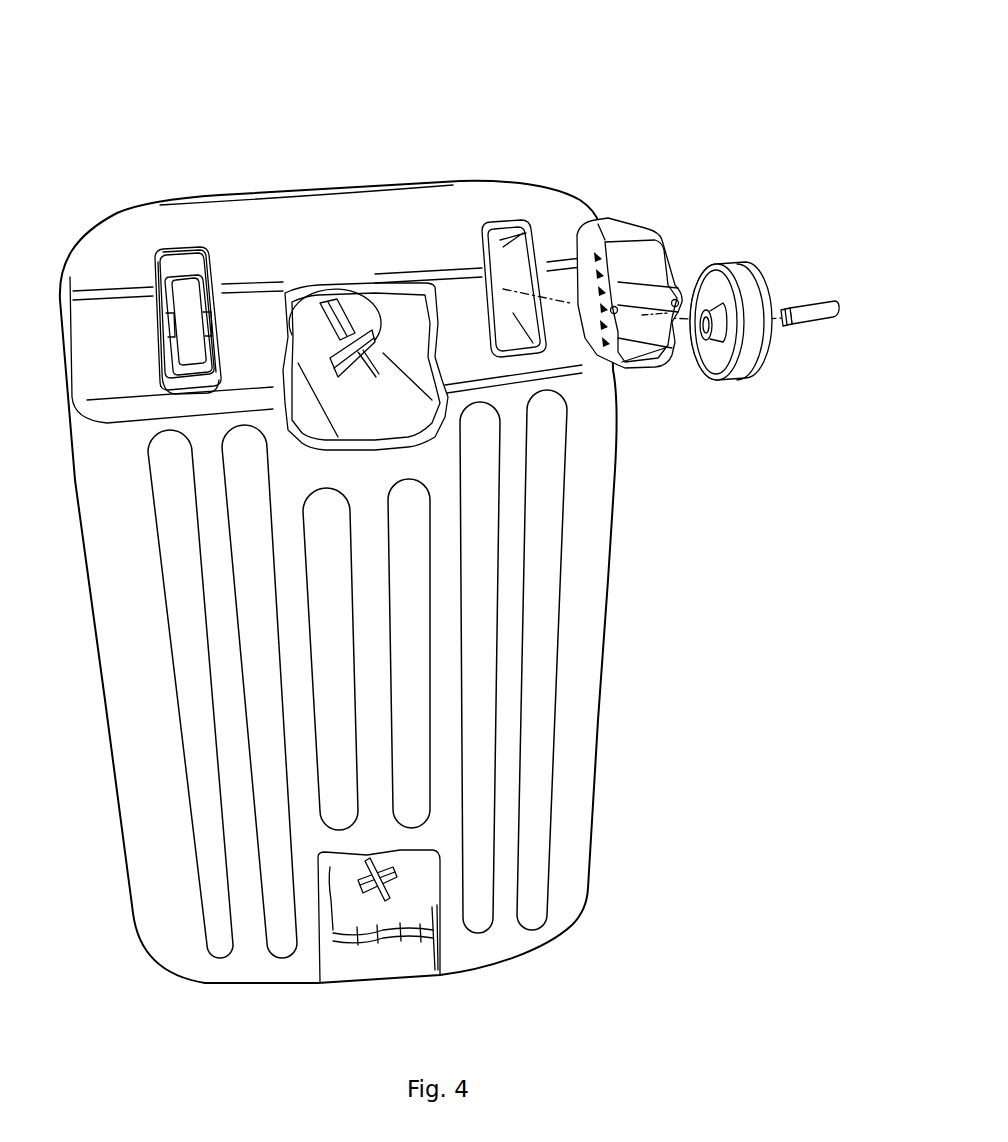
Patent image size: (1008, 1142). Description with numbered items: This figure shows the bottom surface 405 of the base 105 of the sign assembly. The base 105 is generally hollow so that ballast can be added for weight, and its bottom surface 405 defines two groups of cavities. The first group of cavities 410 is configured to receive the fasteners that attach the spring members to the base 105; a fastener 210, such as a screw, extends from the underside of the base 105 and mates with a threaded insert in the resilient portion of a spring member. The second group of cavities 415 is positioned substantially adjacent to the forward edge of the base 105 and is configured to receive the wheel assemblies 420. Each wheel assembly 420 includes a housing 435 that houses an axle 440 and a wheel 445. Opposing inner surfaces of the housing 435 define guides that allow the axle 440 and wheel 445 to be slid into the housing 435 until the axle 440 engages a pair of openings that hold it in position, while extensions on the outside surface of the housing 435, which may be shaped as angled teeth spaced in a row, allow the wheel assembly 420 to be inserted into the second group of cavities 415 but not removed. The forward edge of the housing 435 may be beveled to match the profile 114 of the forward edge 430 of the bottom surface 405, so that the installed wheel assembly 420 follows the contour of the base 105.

The base 105 is at (458, 527).
The profile 114 is at (388, 200).
The fastener 210 is at (335, 300).
The bottom surface 405 is at (583, 628).
The first group of cavities 410 is at (400, 305).
The second group of cavities 415 is at (153, 268).
The wheel assembly 420 is at (213, 270).
The forward edge 430 is at (679, 253).
The housing 435 is at (645, 226).
The axle 440 is at (805, 308).
The wheel 445 is at (755, 268).